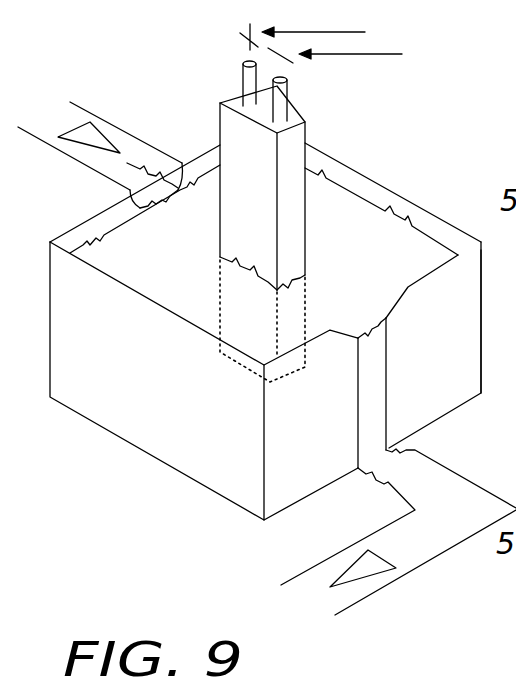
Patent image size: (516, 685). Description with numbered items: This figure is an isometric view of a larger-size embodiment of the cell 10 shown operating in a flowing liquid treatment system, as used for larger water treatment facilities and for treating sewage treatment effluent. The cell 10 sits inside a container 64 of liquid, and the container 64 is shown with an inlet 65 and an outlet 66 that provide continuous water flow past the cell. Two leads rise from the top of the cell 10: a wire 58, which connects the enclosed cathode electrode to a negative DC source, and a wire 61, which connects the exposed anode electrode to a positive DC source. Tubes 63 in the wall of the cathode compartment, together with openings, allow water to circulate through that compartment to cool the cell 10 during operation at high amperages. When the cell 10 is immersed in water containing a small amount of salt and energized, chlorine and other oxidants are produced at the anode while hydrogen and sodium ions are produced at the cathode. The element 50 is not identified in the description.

The cell 10 is at (316, 243).
The wire 58 is at (243, 75).
The wire 61 is at (280, 97).
The tubes 63 is at (515, 418).
The container 64 is at (170, 450).
The inlet 65 is at (130, 177).
The outlet 66 is at (348, 318).
The conductive strip 50 is at (398, 539).